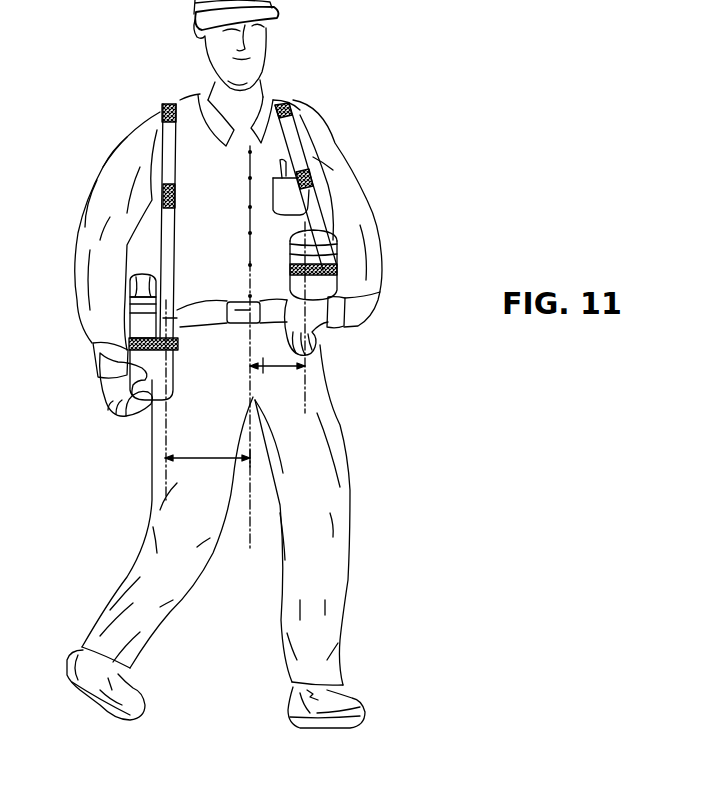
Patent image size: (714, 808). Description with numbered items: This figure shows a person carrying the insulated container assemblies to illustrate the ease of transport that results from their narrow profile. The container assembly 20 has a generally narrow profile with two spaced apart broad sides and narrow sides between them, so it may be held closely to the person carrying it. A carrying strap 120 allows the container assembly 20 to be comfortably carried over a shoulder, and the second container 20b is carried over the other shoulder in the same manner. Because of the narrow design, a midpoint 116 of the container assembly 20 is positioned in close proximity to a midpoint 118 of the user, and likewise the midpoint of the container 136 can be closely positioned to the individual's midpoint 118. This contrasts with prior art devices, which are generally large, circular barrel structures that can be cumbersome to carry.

The carrying strap 120 is at (163, 116).
The container assembly 20 is at (324, 287).
The second holster pouch 20b is at (137, 367).
The midpoint of the container assembly 116 is at (305, 387).
The midpoint of the container 136 is at (165, 436).
The midpoint of the user 118 is at (234, 422).